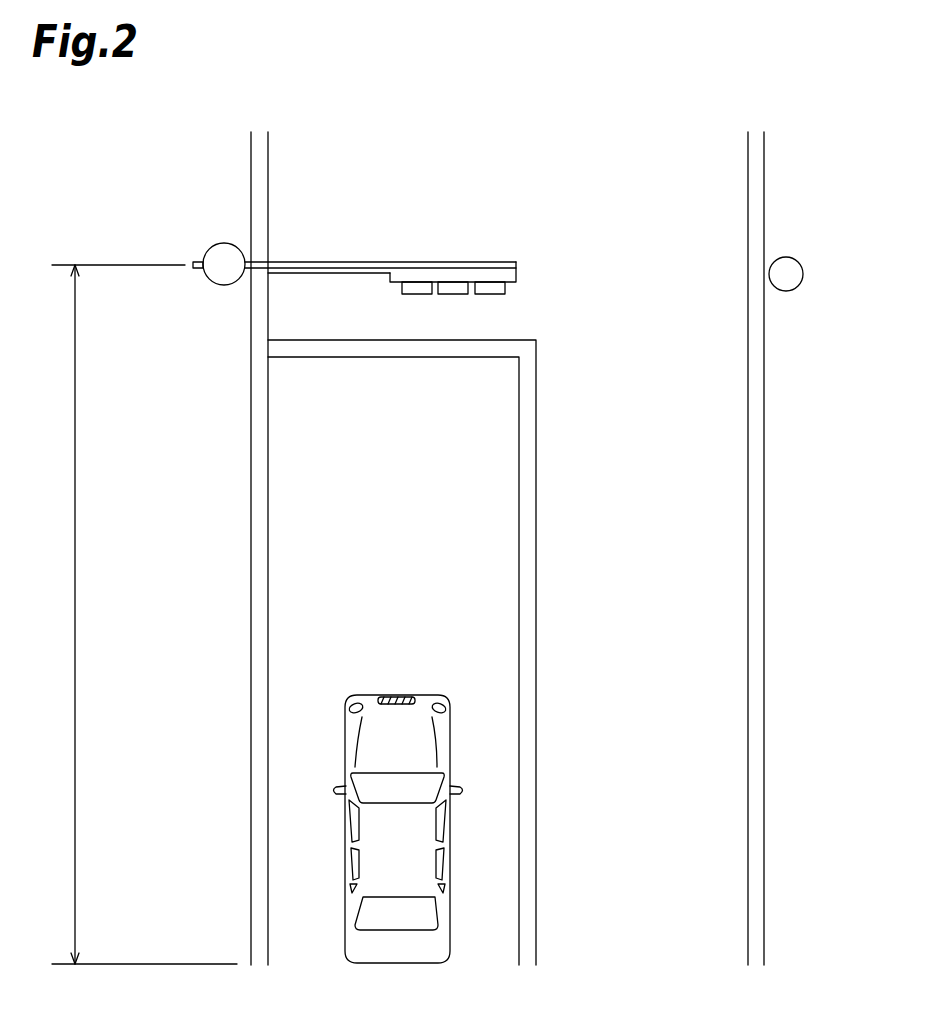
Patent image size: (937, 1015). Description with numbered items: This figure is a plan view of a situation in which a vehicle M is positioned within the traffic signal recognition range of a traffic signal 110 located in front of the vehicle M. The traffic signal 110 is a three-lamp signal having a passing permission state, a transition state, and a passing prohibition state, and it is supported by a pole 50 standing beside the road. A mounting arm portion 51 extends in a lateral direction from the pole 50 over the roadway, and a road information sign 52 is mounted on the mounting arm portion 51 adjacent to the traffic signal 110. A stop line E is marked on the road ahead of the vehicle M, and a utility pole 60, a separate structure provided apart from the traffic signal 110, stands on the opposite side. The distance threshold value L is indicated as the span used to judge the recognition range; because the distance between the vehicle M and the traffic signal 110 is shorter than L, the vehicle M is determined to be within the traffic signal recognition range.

The pole 50 is at (218, 243).
The mounting arm portion 51 is at (358, 261).
The road information sign 52 is at (327, 274).
The traffic signal 110 is at (517, 277).
The utility pole 60 is at (788, 257).
The stop line E is at (395, 359).
The vehicle M is at (370, 693).
The distance threshold value L is at (143, 614).